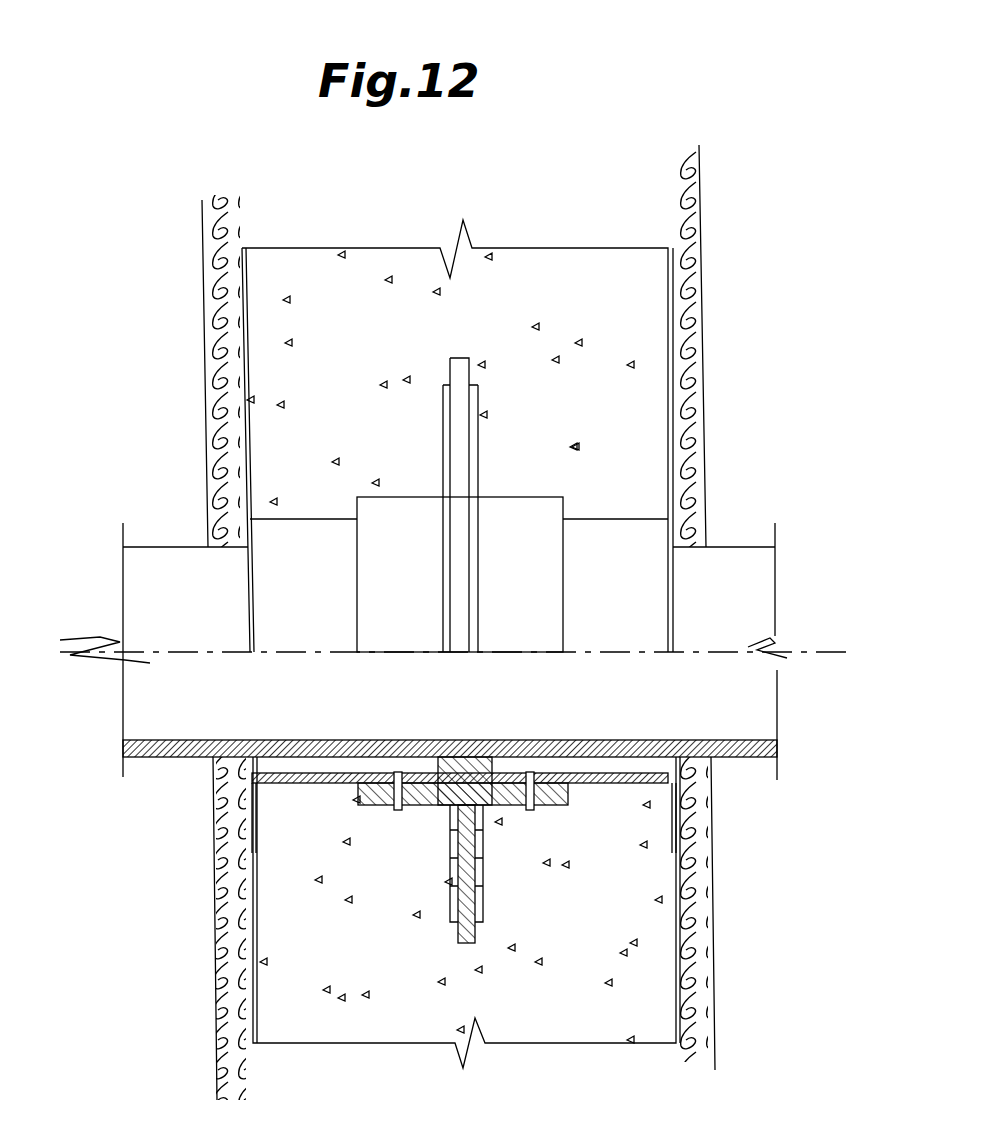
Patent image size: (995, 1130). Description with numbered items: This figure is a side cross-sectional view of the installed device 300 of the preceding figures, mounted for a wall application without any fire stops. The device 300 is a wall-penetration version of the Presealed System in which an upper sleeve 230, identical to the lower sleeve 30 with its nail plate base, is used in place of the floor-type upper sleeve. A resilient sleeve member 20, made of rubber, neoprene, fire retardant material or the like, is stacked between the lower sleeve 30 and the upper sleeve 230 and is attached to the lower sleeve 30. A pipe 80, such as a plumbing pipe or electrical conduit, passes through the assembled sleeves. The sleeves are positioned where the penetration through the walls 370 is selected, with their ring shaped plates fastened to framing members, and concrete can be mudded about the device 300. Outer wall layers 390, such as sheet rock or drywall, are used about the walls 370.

The installed device 300 is at (674, 70).
The walls 370 is at (597, 313).
The outer wall layers 390 is at (688, 385).
The resilient sleeve member 20 is at (466, 453).
The pipe 80 is at (750, 743).
The lower sleeve 30 is at (633, 783).
The upper sleeve 230 is at (307, 775).